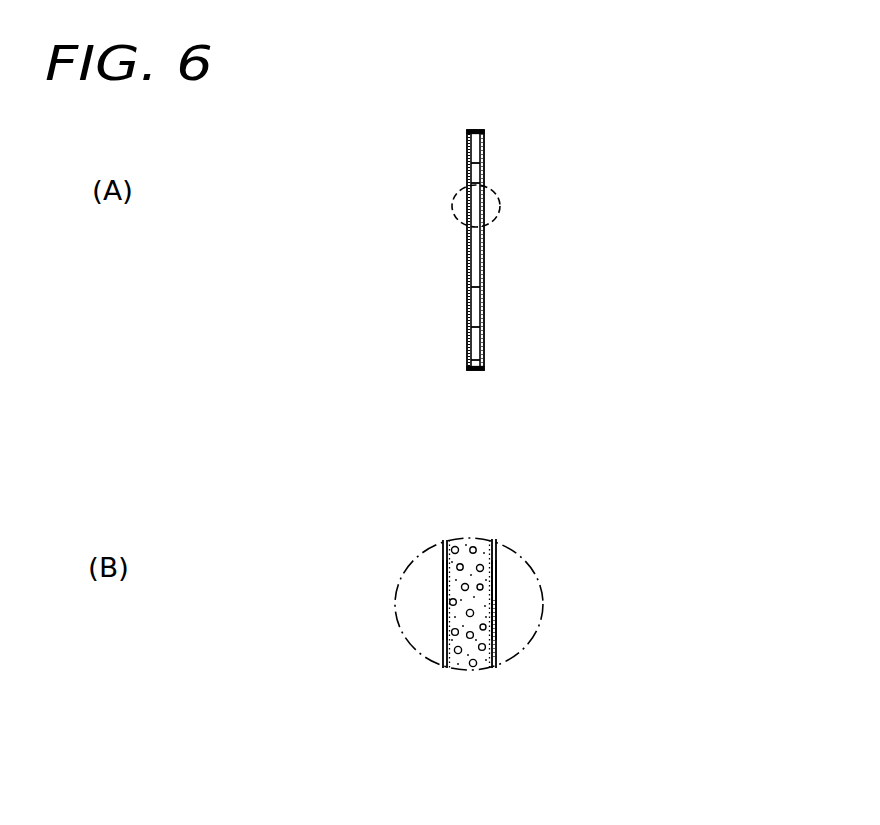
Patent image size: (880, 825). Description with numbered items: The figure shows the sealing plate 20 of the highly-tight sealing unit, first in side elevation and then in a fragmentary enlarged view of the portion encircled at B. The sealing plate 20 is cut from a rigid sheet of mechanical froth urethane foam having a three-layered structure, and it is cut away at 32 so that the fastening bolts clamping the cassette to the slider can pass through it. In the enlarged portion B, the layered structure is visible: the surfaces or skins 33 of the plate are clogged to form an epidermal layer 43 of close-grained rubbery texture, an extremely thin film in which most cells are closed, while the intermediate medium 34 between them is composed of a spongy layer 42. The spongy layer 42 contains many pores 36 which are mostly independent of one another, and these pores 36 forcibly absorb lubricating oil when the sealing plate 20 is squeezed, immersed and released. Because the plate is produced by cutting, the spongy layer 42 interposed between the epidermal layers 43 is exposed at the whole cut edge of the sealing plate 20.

The sealing plate 20 is at (508, 145).
The cut-away portion 32 is at (472, 132).
The encircled portion B is at (502, 208).
The intermediate medium 34 is at (473, 572).
The pores 36 is at (471, 638).
The epidermal layer 43 is at (442, 590).
The skin 33 is at (443, 613).
The spongy layer 42 is at (493, 652).